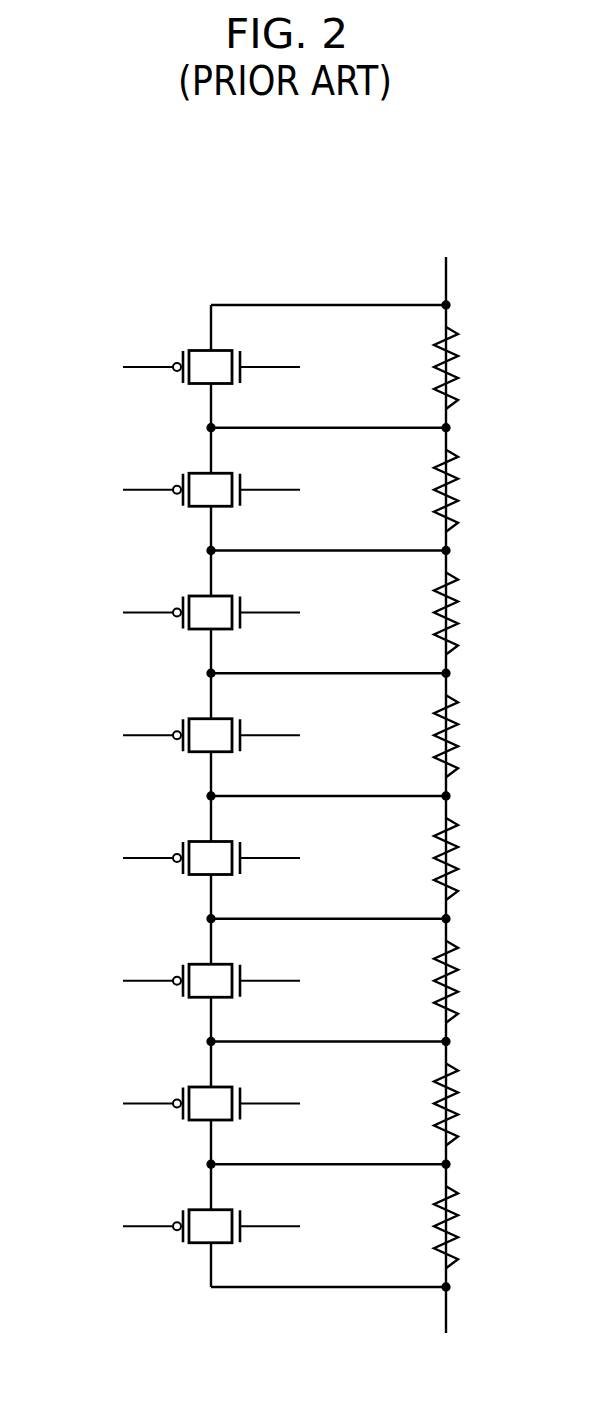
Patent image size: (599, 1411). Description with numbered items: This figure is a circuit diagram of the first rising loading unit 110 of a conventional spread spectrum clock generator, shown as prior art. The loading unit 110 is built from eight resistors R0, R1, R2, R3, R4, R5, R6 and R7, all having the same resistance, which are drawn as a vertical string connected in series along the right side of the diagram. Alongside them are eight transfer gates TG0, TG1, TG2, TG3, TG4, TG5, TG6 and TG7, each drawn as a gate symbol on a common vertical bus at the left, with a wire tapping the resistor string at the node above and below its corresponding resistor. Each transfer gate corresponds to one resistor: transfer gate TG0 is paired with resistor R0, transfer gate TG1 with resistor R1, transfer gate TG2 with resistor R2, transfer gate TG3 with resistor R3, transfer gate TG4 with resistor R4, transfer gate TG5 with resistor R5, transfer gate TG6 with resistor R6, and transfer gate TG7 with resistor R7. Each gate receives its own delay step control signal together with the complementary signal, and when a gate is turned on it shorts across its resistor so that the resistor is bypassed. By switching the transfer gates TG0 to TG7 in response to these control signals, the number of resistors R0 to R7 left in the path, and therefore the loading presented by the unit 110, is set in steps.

The resistor string / voltage divider circuit with transmission gates (prior art) 110 is at (214, 200).
The transfer gate TG0 is at (203, 352).
The transfer gate TG1 is at (203, 475).
The transfer gate TG2 is at (203, 598).
The transfer gate TG3 is at (203, 720).
The transfer gate TG4 is at (203, 843).
The transfer gate TG5 is at (203, 966).
The transfer gate TG6 is at (203, 1089).
The transfer gate TG7 is at (203, 1211).
The resistor R0 is at (463, 368).
The resistor R1 is at (463, 491).
The resistor R2 is at (463, 614).
The resistor R3 is at (463, 736).
The resistor R4 is at (463, 859).
The resistor R5 is at (463, 982).
The resistor R6 is at (463, 1105).
The resistor R7 is at (463, 1227).